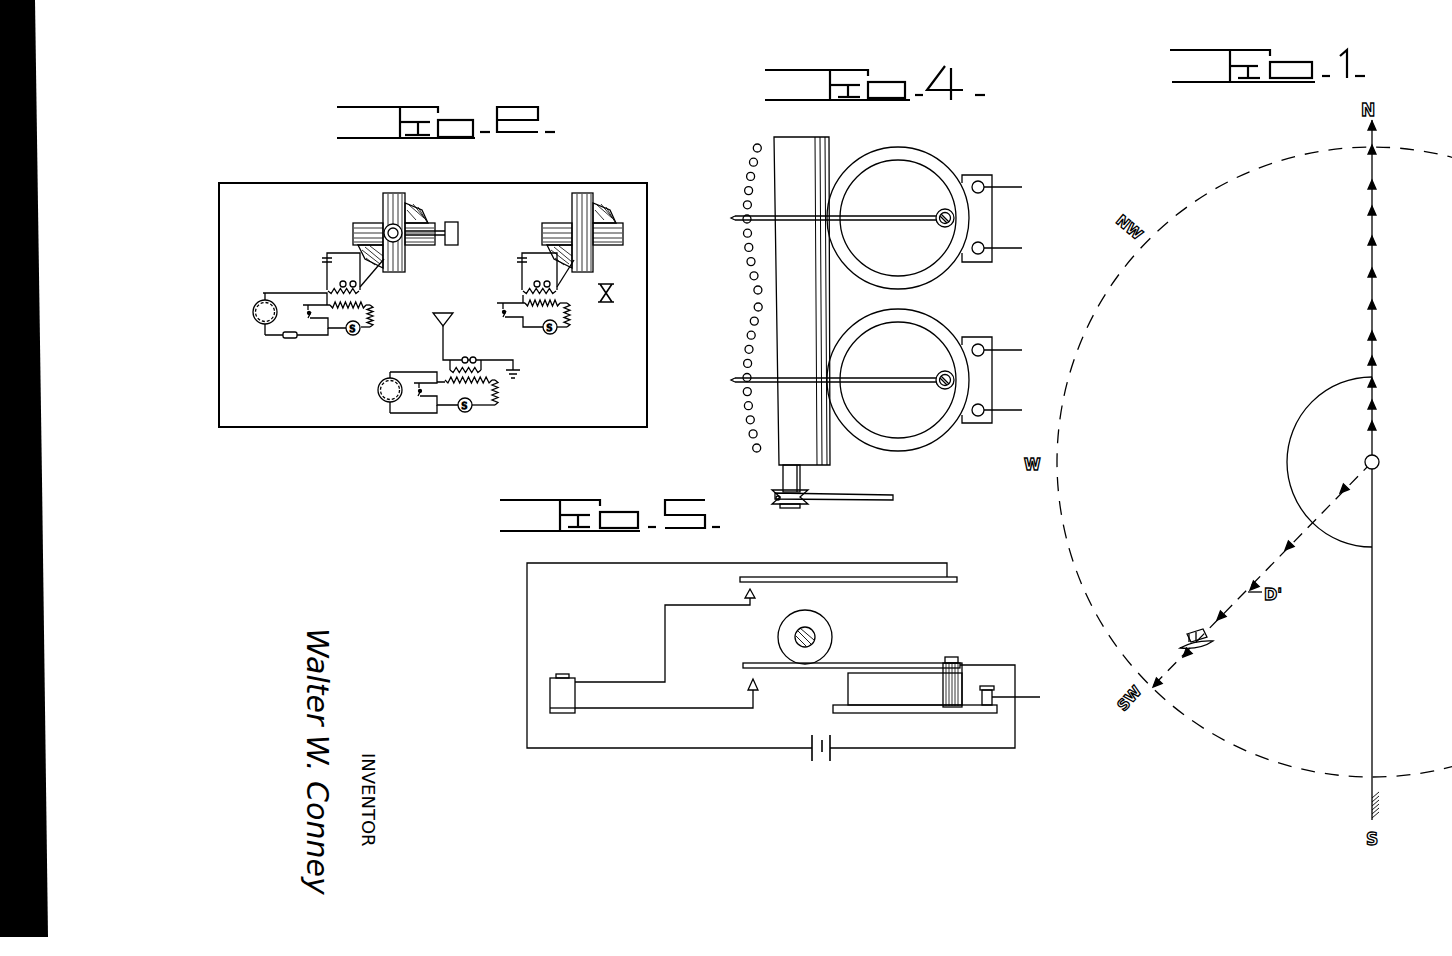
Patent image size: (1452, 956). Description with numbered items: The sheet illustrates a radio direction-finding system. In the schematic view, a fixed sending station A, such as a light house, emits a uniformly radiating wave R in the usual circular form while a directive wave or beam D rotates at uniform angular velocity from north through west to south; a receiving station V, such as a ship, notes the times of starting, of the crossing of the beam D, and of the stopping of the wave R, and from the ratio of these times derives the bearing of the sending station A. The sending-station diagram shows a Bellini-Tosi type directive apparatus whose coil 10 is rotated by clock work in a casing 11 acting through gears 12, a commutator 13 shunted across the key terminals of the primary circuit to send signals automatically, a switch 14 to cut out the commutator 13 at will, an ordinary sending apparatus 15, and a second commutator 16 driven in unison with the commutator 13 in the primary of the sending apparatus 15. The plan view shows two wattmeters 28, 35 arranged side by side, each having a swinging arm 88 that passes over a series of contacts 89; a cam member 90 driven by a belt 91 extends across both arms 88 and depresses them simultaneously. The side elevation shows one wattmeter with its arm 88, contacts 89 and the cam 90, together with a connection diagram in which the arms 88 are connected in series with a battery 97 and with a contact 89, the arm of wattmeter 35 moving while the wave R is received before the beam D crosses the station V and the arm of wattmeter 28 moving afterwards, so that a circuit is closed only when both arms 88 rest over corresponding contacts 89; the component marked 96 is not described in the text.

In FIG. 2, the coil 10 is at (386, 256).
In FIG. 2, the casing 11 is at (459, 226).
In FIG. 2, the gears 12 is at (421, 213).
In FIG. 2, the commutator 13 is at (258, 320).
In FIG. 2, the switch 14 is at (290, 339).
In FIG. 2, the sending apparatus 15 is at (467, 345).
In FIG. 2, the second commutator 16 is at (383, 398).
In FIG. 4, the wattmeter 28 is at (993, 224).
In FIG. 4, the wattmeter 35 is at (993, 387).
In FIG. 4, the swinging arm 88 is at (866, 222).
In FIG. 5, the swinging arm 88 is at (818, 582).
In FIG. 4, the contacts 89 is at (746, 262).
In FIG. 5, the contacts 89 is at (757, 592).
In FIG. 4, the cam member 90 is at (831, 461).
In FIG. 5, the cam member 90 is at (820, 630).
In FIG. 4, the belt 91 is at (847, 500).
In FIG. 5, the battery 96 is at (576, 697).
In FIG. 5, the battery 97 is at (817, 758).
In FIG. 1, the sending station A is at (1383, 464).
In FIG. 1, the directive wave D is at (1369, 296).
In FIG. 1, the uniformly radiating wave R is at (1060, 372).
In FIG. 1, the receiving station V is at (1196, 650).